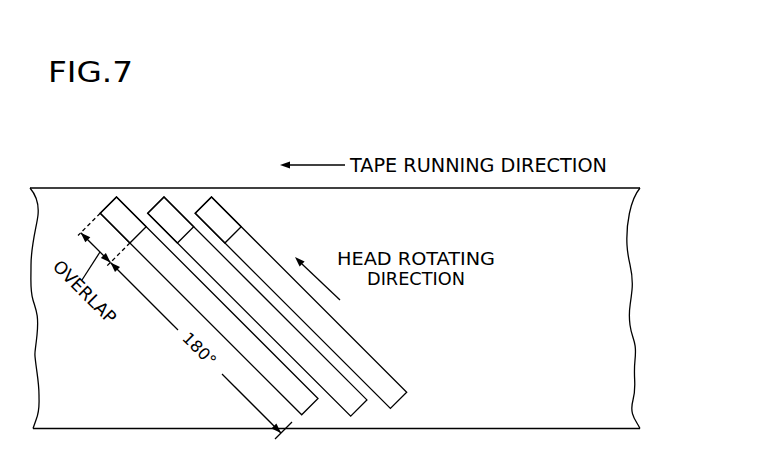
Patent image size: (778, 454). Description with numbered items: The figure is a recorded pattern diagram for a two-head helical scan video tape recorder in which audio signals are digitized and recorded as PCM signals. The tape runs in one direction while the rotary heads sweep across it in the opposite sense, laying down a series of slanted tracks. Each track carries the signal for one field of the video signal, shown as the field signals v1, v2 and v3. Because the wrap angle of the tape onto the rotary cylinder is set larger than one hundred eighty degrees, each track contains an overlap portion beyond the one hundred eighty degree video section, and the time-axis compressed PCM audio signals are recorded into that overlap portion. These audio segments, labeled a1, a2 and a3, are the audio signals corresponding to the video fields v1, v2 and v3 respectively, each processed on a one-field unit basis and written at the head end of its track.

The audio signal a1 is at (123, 220).
The audio signal a2 is at (171, 220).
The audio signal a3 is at (218, 220).
The video field signal v1 is at (209, 306).
The video field signal v2 is at (257, 306).
The video field signal v3 is at (301, 302).